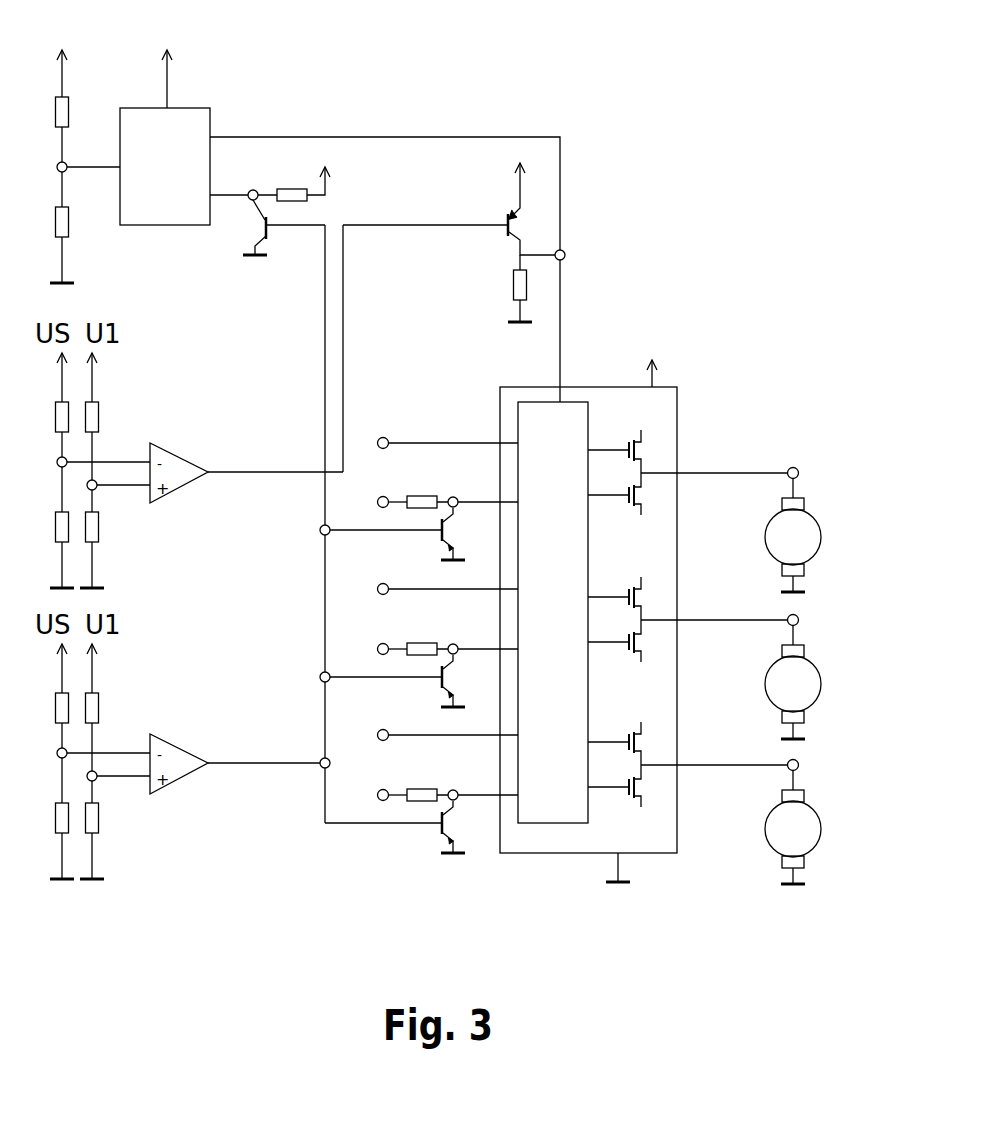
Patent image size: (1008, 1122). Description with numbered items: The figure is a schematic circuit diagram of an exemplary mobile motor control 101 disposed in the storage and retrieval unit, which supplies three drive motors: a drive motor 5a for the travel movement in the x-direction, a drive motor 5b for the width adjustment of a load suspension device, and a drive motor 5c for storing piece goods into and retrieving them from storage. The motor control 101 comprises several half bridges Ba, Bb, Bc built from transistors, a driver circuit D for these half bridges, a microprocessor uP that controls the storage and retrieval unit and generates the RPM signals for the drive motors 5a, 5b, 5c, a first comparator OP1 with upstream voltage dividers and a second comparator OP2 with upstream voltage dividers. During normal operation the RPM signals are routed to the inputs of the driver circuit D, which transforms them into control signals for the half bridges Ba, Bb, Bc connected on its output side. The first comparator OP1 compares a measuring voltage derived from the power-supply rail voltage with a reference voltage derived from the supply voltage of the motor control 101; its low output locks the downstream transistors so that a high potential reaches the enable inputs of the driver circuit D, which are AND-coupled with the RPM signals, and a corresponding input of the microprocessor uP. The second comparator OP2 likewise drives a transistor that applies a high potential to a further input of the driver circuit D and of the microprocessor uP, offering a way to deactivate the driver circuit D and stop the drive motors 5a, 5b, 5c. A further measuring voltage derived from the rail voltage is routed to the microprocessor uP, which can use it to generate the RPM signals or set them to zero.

The motor control 101 is at (673, 105).
The drive motor 5a is at (803, 531).
The drive motor 5b is at (803, 678).
The drive motor 5c is at (803, 823).
The microprocessor uP is at (165, 166).
The driver circuit D is at (588, 620).
The first comparator OP1 is at (182, 744).
The second comparator OP2 is at (189, 453).
The half bridge Ba is at (687, 459).
The half bridge Bb is at (687, 605).
The half bridge Bc is at (687, 751).